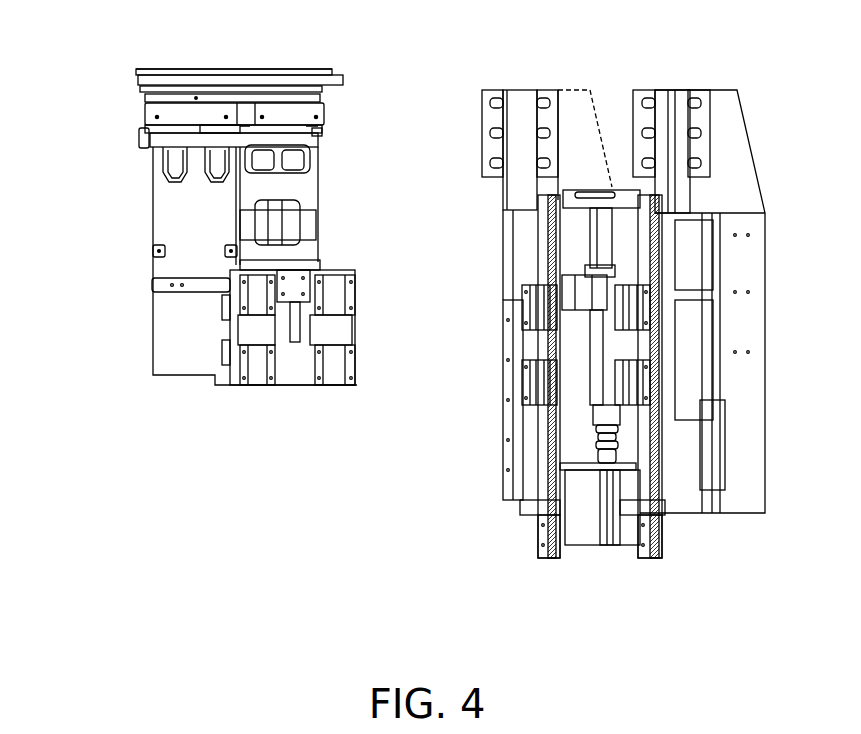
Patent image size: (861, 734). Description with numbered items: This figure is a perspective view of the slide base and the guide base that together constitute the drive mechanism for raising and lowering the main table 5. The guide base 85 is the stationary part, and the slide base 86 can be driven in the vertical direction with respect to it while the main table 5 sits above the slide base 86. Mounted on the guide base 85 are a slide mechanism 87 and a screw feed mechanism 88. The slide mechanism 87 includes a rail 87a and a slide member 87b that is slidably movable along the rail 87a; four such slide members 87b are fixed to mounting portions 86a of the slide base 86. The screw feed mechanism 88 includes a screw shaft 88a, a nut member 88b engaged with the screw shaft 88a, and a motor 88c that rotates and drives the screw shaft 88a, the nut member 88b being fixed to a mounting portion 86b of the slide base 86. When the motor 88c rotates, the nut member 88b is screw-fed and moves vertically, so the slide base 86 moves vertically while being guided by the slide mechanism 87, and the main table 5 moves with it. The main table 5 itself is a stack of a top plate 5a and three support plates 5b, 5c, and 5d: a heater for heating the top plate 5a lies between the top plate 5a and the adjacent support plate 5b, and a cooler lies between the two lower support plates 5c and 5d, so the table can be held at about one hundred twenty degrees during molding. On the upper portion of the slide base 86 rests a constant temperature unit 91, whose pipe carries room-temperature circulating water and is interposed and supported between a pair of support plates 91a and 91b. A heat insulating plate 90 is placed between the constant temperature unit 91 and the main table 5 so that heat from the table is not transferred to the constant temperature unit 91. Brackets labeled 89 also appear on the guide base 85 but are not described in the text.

The main table 5 is at (48, 50).
The top plate 5a is at (136, 72).
The support plate 5b is at (140, 88).
The support plate 5c is at (145, 96).
The support plate 5d is at (145, 102).
The heat insulating plate 90 is at (145, 117).
The constant temperature unit 91 is at (140, 140).
The support plate 91a is at (215, 124).
The support plate 91b is at (200, 135).
The slide base 86 is at (165, 340).
The mounting portion 86a is at (336, 283).
The mounting portion 86b is at (318, 316).
The bracket 89 is at (487, 118).
The guide base 85 is at (757, 255).
The slide mechanism 87 is at (525, 566).
The rail 87a is at (539, 535).
The slide member 87b is at (522, 310).
The screw feed mechanism 88 is at (576, 440).
The screw shaft 88a is at (607, 234).
The nut member 88b is at (584, 283).
The motor 88c is at (590, 545).